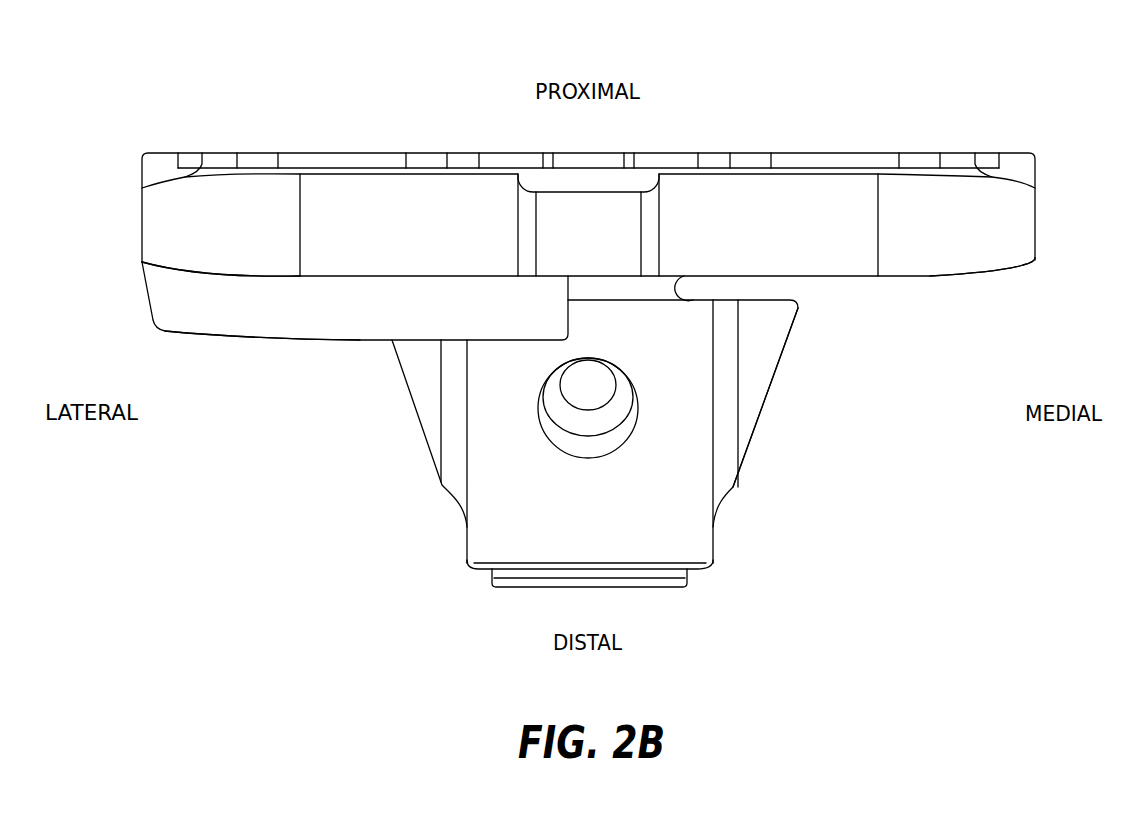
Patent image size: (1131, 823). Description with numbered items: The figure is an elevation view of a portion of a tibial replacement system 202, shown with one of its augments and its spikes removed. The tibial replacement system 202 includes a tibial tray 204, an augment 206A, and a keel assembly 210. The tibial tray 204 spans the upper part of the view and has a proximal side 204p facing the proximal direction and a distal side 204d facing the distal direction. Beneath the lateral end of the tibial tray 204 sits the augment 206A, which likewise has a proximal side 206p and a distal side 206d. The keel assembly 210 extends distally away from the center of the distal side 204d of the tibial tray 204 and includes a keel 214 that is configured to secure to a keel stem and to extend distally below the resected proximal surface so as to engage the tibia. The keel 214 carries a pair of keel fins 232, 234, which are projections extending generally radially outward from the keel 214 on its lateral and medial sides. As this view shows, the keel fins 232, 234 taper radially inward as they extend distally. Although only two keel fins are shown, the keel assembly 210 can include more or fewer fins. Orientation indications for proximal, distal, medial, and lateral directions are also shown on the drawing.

The tibial replacement system 202 is at (1017, 61).
The tibial tray 204 is at (1047, 227).
The proximal side 204p is at (1020, 152).
The distal side 204d is at (1020, 270).
The augment 206A is at (141, 301).
The proximal side 206p is at (170, 265).
The distal side 206d is at (168, 336).
The keel assembly 210 is at (428, 541).
The keel 214 is at (747, 541).
The keel fin 232 is at (415, 418).
The keel fin 234 is at (760, 413).